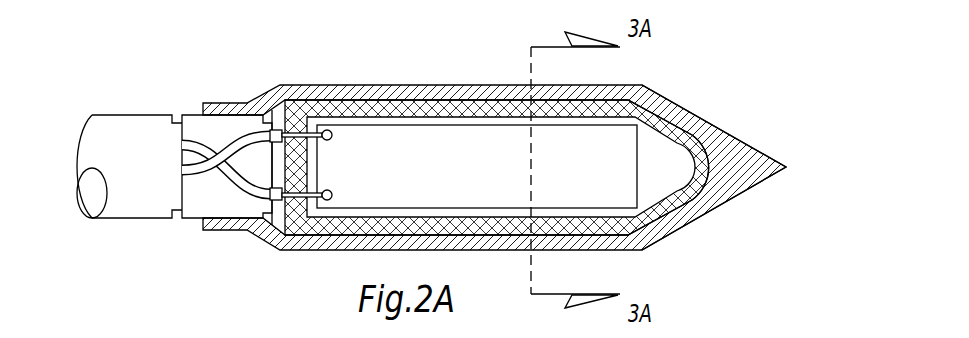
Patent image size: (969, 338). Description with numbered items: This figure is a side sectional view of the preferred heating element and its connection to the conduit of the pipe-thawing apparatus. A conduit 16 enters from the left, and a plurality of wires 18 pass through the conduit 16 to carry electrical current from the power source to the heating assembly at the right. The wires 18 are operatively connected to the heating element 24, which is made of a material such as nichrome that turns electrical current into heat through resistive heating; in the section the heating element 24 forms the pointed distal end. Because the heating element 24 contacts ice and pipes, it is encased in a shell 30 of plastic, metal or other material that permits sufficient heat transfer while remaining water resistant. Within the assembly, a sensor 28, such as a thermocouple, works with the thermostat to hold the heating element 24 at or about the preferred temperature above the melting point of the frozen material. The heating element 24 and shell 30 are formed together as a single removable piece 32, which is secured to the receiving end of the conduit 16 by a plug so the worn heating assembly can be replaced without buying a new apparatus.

The conduit 16 is at (108, 122).
The wires 18 is at (332, 136).
The heating element 24 is at (753, 155).
The sensor 28 is at (593, 133).
The shell 30 is at (383, 92).
The removable piece 32 is at (485, 100).